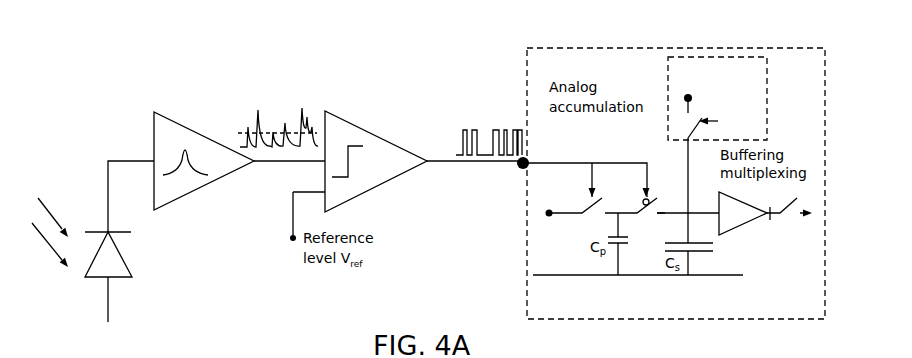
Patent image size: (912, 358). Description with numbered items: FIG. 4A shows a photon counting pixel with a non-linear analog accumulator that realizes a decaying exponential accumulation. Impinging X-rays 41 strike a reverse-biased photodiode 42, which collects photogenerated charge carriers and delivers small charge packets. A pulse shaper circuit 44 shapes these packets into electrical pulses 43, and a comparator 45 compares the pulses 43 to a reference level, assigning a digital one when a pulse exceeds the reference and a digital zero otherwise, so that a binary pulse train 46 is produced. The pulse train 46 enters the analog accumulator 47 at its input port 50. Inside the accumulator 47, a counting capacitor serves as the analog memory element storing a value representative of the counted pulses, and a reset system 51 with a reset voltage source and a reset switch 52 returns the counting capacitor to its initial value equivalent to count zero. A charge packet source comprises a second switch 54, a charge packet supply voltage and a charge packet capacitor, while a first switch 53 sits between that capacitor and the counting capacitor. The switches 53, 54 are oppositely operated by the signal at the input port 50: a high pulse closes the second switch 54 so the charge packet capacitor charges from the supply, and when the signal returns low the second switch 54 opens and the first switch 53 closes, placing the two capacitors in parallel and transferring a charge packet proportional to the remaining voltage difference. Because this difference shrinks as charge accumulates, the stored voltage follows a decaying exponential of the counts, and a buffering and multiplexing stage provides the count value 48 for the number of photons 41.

The impinging X-rays 41 is at (48, 233).
The photodiode 42 is at (110, 240).
The electrical pulses 43 is at (264, 97).
The pulse shaper circuit 44 is at (168, 143).
The comparator 45 is at (345, 142).
The pulse train 46 is at (499, 90).
The analog accumulator 47 is at (527, 252).
The count value 48 is at (770, 217).
The input port 50 is at (528, 158).
The reset system 51 is at (765, 112).
The reset switch 52 is at (719, 107).
The first switch 53 is at (640, 210).
The second switch 54 is at (590, 212).